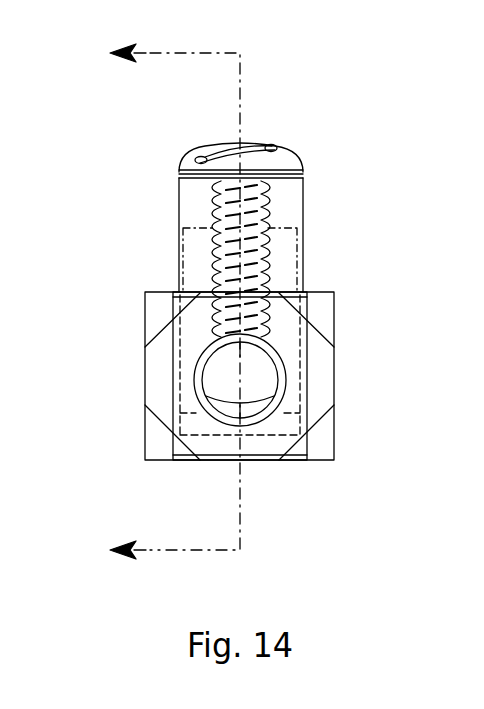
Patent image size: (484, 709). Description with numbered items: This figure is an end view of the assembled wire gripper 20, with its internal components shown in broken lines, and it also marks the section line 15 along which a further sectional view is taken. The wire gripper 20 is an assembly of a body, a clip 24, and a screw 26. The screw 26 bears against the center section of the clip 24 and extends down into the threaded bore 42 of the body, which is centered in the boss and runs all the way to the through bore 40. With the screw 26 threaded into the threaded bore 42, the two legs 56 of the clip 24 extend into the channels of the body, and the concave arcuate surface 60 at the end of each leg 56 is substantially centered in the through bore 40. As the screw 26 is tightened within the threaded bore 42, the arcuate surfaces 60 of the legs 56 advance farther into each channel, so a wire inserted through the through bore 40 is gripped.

The wire gripper 20 is at (106, 167).
The section line 15- 15 is at (175, 304).
The screw 26 is at (273, 148).
The clip 24 is at (290, 200).
The threaded bore 42 is at (213, 270).
The legs 56 is at (300, 357).
The through bore 40 is at (257, 375).
The concave arcuate surface 60 is at (241, 410).